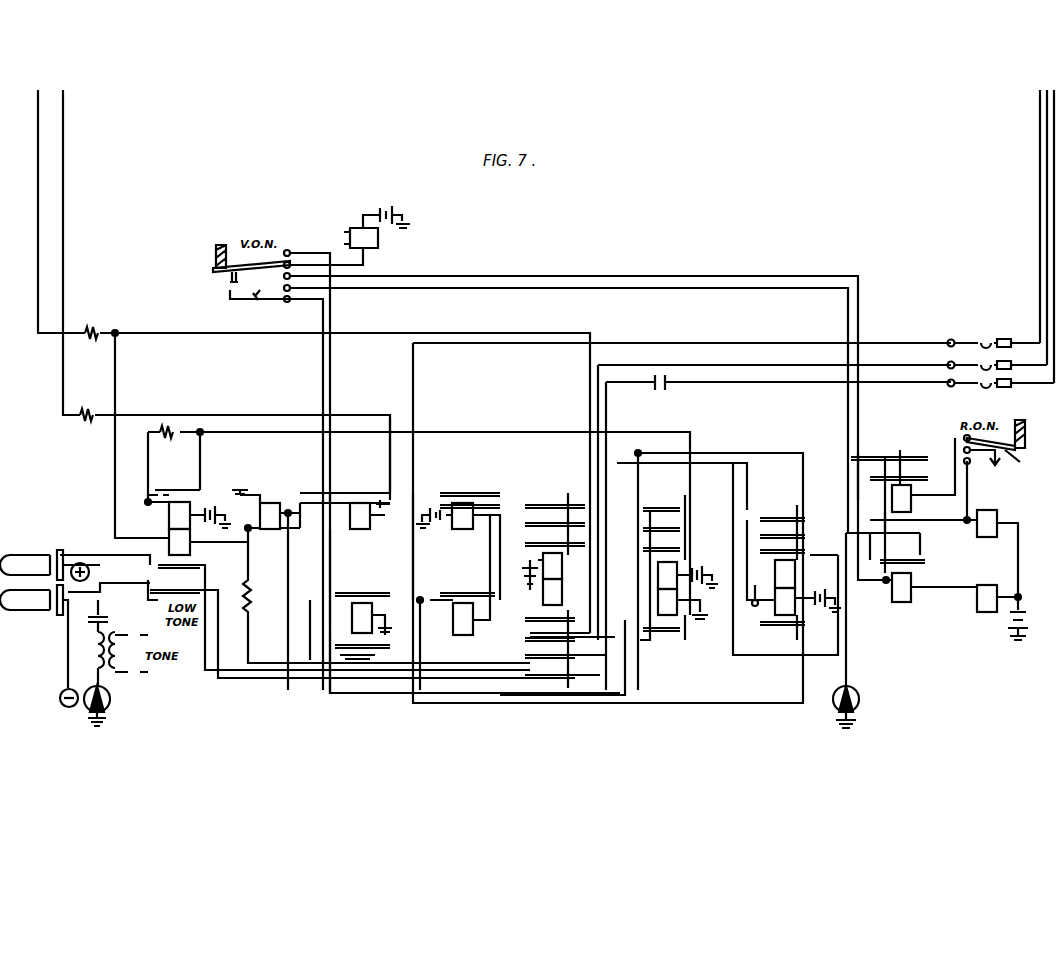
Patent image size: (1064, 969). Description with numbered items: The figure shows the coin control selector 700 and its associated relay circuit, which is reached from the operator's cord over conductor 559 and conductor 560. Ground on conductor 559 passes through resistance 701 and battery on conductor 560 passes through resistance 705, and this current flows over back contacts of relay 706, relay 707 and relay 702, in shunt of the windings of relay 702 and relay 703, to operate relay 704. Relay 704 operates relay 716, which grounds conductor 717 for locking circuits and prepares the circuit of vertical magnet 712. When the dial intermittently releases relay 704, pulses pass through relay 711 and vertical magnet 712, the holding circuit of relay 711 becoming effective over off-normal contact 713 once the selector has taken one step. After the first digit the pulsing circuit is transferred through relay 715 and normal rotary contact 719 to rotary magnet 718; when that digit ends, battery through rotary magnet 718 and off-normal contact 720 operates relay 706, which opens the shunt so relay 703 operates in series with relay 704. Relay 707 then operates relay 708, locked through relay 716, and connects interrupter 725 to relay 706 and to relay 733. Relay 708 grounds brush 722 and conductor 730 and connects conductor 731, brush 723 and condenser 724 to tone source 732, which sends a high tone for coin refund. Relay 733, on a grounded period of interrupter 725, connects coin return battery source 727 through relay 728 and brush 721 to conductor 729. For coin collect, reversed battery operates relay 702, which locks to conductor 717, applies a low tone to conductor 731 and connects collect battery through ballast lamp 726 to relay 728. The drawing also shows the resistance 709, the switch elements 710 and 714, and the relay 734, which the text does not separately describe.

The conductor 559 is at (38, 233).
The conductor 560 is at (63, 255).
The coin control selector 700 is at (707, 505).
The resistance 701 is at (92, 328).
The relay 702 is at (168, 526).
The relay 703 is at (270, 530).
The relay 704 is at (360, 530).
The resistance 705 is at (381, 512).
The relay 706 is at (658, 610).
The relay 707 is at (782, 610).
The relay 708 is at (563, 592).
The resistor 709 is at (252, 598).
The switch contact 710 is at (230, 284).
The relay 711 is at (900, 603).
The vertical magnet 712 is at (987, 613).
The off-normal contact 713 is at (260, 300).
The switch actuator 714 is at (245, 262).
The relay 715 is at (900, 480).
The relay 716 is at (362, 602).
The conductor 717 is at (740, 450).
The rotary magnet 718 is at (998, 515).
The normal rotary contact 719 is at (1009, 445).
The off-normal contact 720 is at (990, 468).
The brush 721 is at (949, 340).
The brush 722 is at (952, 365).
The brush 723 is at (952, 386).
The condenser 724 is at (660, 392).
The interrupter 725 is at (859, 697).
The ballast lamp 726 is at (35, 553).
The coin return battery source 727 is at (33, 615).
The relay 728 is at (463, 602).
The conductor 729 is at (1040, 238).
The conductor 730 is at (1047, 219).
The conductor 731 is at (1054, 200).
The tone source 732 is at (110, 672).
The relay 733 is at (463, 530).
The relay 734 is at (364, 232).